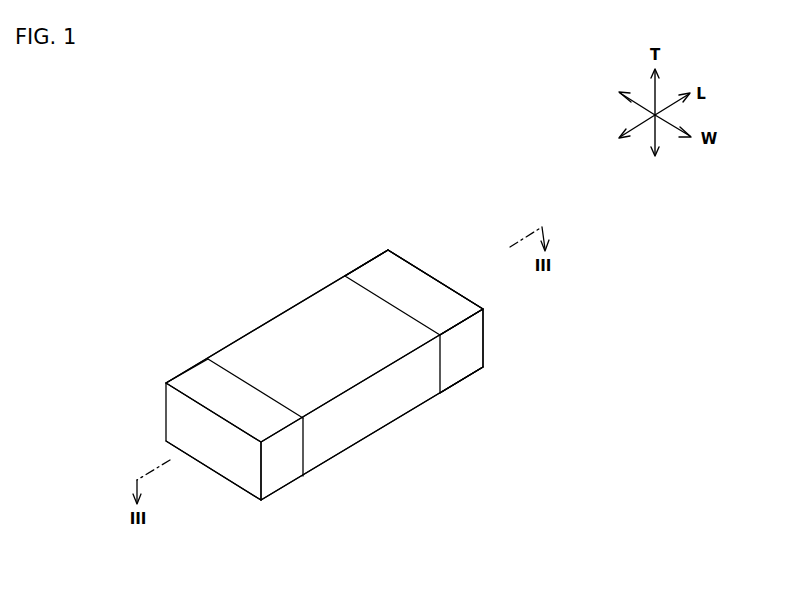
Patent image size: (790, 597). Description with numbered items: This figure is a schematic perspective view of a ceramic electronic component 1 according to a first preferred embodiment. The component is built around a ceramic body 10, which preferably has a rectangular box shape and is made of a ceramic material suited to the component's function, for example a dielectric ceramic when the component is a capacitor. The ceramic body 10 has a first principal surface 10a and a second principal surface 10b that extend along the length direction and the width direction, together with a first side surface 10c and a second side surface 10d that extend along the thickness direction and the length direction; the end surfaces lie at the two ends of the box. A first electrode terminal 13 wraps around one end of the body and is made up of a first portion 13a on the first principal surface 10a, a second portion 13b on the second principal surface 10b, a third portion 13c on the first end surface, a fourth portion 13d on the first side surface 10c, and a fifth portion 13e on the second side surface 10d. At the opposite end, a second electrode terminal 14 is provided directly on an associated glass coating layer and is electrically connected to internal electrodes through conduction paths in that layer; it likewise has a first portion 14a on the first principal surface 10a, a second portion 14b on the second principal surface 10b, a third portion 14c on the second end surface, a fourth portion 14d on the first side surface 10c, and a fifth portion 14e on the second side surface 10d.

The ceramic electronic component 1 is at (446, 192).
The ceramic body 10 is at (302, 283).
The first principal surface 10a is at (308, 332).
The second principal surface 10b is at (387, 427).
The first side surface 10c is at (325, 447).
The second side surface 10d is at (257, 332).
The first electrode terminal 13 is at (163, 388).
The first portion 13a is at (230, 390).
The second portion 13b is at (228, 487).
The third portion 13c is at (222, 453).
The fourth portion 13d is at (278, 465).
The fifth portion 13e is at (187, 367).
The second electrode terminal 14 is at (488, 323).
The first portion 14a is at (408, 283).
The second portion 14b is at (453, 388).
The third portion 14c is at (463, 288).
The fourth portion 14d is at (462, 353).
The fifth portion 14e is at (368, 258).